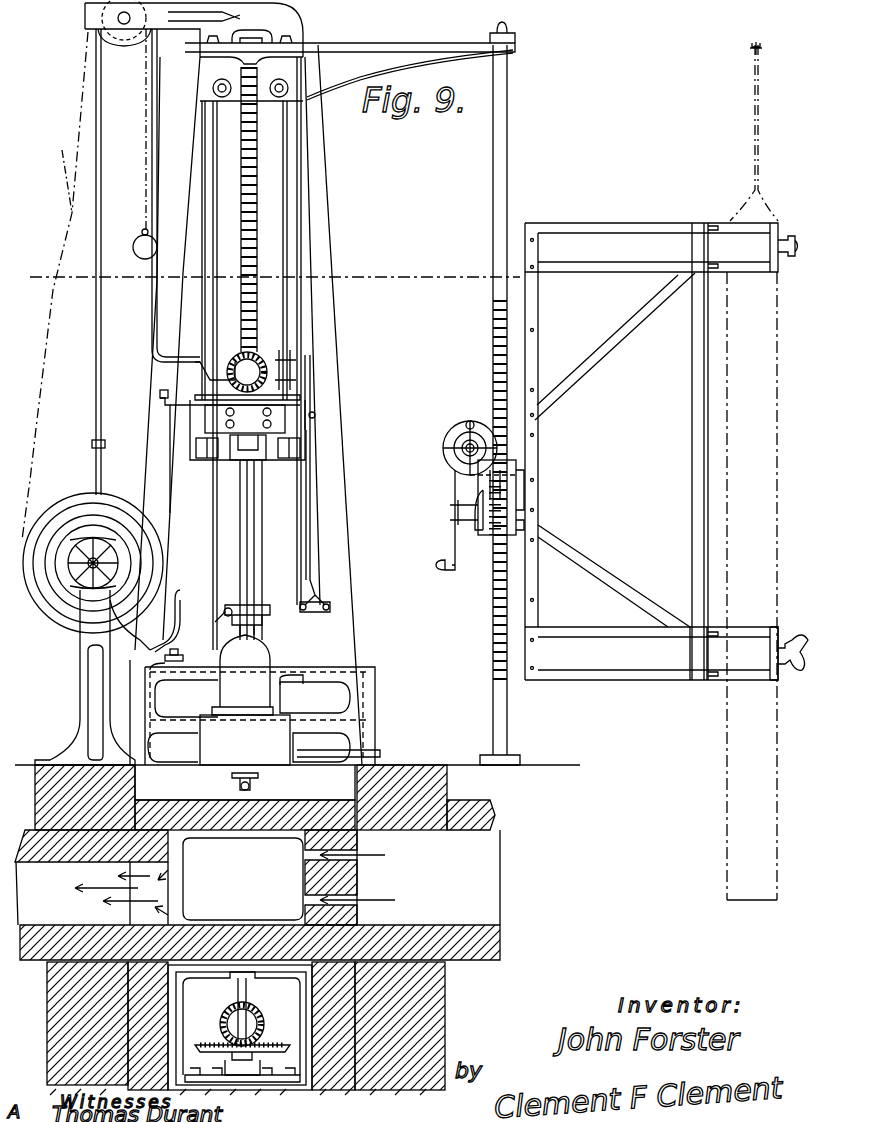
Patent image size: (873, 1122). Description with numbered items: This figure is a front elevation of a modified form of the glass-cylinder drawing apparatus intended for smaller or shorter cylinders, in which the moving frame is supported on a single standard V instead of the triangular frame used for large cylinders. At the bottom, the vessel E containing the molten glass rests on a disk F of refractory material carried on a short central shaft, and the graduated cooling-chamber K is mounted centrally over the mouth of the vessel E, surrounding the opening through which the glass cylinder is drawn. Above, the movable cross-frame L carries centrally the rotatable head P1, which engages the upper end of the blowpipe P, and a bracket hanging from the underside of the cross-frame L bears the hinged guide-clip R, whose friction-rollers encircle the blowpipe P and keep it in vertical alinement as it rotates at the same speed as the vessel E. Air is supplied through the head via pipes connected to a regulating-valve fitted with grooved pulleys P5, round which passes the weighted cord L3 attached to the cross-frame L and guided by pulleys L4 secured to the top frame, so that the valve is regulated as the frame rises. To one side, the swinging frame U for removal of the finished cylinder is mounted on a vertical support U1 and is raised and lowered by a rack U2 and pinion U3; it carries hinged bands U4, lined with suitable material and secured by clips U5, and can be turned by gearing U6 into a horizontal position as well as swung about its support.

The pulleys L4 is at (100, 25).
The weighted cord L3 is at (66, 150).
The standard V is at (293, 184).
The movable cross-frame L is at (298, 413).
The rotatable head P1 is at (256, 455).
The blowpipe P is at (255, 525).
The hinged guide-clip R is at (262, 610).
The graduated cooling-chamber K is at (235, 745).
The grooved pulleys P5 is at (70, 600).
The vertical support U1 is at (503, 730).
The gearing U6 is at (468, 422).
The pinion U3 is at (485, 517).
The rack U2 is at (492, 582).
The swinging frame U is at (610, 675).
The hinged bands U4 is at (750, 655).
The clips U5 is at (775, 672).
The vessel E is at (341, 877).
The disk F is at (240, 996).